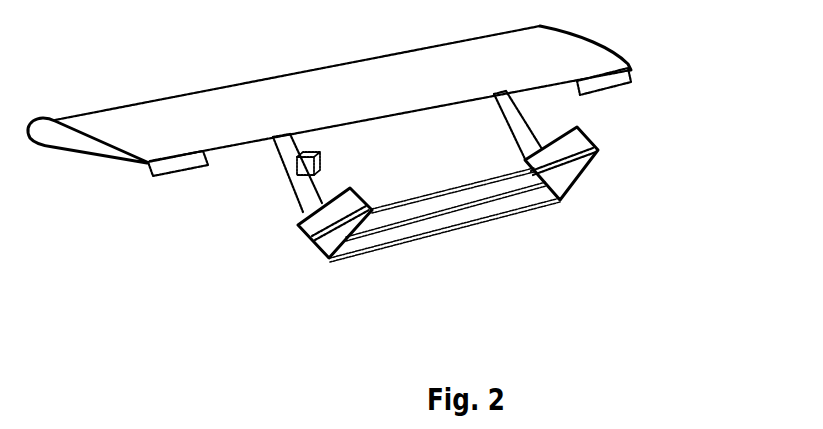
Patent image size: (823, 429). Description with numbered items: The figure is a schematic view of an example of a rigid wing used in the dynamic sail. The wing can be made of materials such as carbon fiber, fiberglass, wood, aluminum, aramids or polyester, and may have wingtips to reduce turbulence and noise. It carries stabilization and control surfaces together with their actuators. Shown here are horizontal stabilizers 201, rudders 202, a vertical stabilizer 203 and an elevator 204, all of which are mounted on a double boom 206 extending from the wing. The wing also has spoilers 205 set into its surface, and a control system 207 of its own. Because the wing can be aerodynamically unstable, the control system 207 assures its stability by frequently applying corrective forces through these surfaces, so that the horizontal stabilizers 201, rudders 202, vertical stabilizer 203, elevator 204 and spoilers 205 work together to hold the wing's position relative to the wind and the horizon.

The horizontal stabilizer 201 is at (300, 226).
The rudder 202 is at (330, 260).
The vertical stabilizer 203 is at (420, 217).
The elevator 204 is at (517, 200).
The spoiler 205 is at (153, 172).
The double boom 206 is at (523, 138).
The control system 207 is at (307, 167).